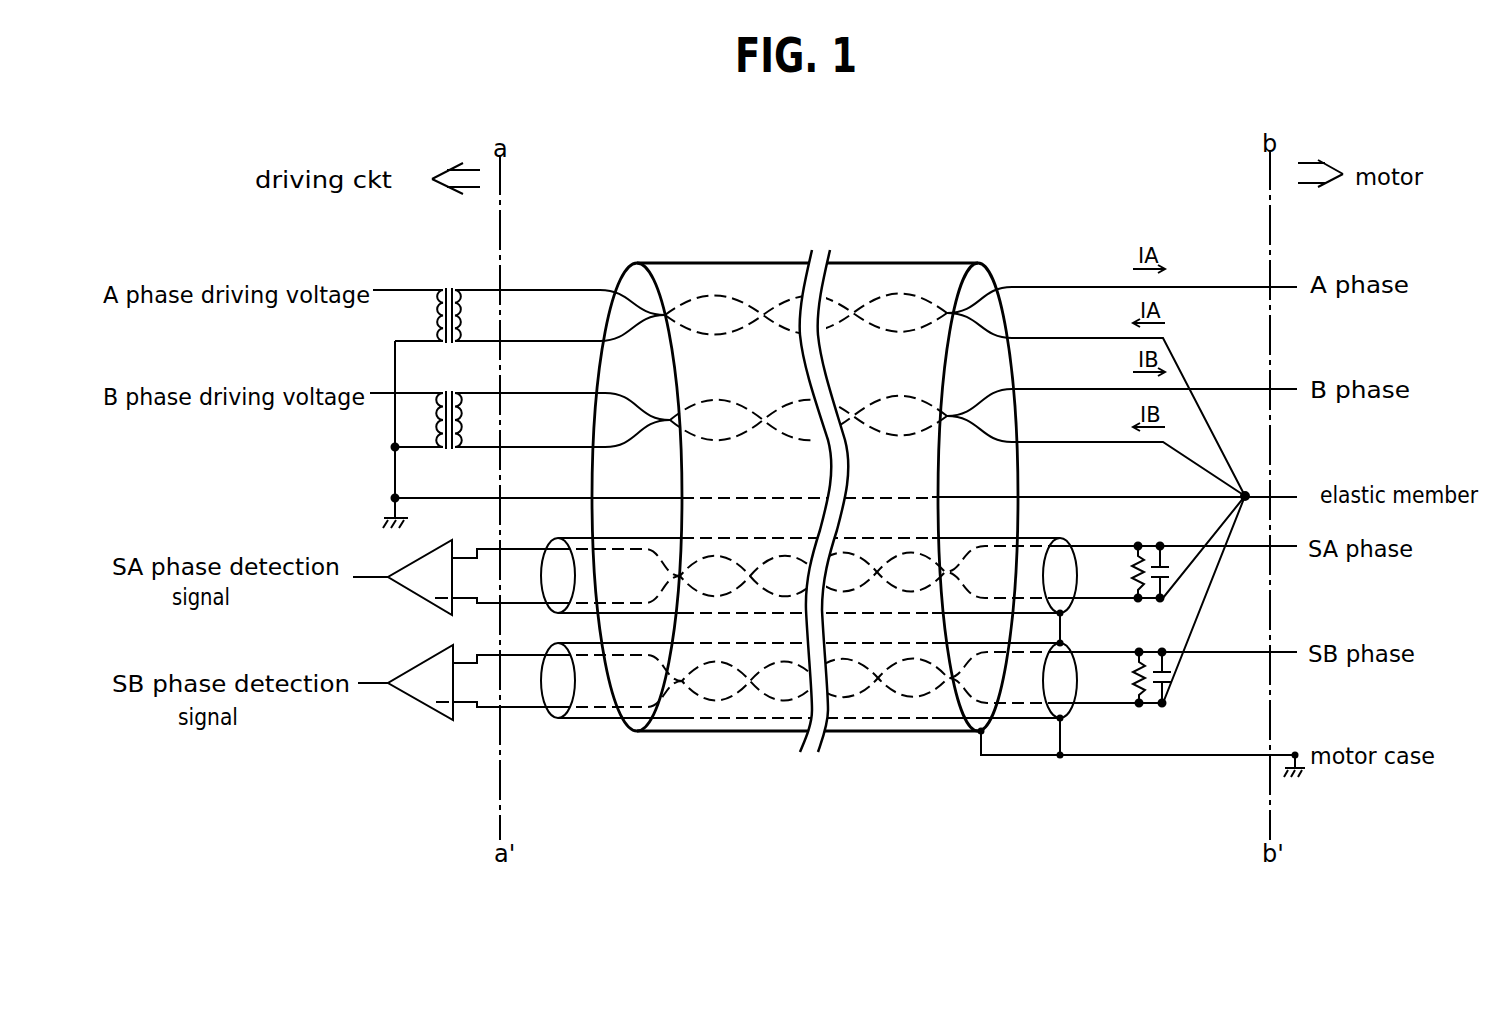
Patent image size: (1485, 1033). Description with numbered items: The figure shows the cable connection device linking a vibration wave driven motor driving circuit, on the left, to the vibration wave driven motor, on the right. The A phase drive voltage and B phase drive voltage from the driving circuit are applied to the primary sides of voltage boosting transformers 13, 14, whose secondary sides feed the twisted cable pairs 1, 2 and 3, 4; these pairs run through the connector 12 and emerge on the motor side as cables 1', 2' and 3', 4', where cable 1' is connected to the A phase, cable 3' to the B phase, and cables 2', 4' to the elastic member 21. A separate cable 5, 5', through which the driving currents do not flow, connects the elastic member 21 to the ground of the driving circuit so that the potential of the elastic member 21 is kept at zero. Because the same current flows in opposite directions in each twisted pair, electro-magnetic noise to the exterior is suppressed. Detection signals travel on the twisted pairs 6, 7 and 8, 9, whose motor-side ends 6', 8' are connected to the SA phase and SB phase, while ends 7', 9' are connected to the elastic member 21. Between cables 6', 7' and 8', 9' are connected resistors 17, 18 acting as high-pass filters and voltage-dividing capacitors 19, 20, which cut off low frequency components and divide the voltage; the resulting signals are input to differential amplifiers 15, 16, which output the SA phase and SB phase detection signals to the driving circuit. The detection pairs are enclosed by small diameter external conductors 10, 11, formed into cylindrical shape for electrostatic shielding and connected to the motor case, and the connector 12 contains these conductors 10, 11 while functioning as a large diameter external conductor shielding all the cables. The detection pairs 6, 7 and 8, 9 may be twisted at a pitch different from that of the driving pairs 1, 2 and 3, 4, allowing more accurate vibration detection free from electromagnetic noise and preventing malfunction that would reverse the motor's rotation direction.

The twisted cable 1 is at (658, 298).
The twisted cable 2 is at (560, 327).
The twisted cable 3 is at (655, 404).
The twisted cable 4 is at (562, 432).
The ground cable 5 is at (663, 481).
The twisted cable 6 is at (636, 562).
The twisted cable 7 is at (505, 590).
The twisted cable 8 is at (635, 667).
The twisted cable 9 is at (505, 694).
The cable 1' is at (1026, 295).
The cable 2' is at (1096, 403).
The cable 3' is at (1028, 400).
The cable 4' is at (1096, 455).
The ground cable 5' is at (1114, 481).
The cable 6' is at (1053, 559).
The cable 7' is at (1152, 548).
The cable 8' is at (1052, 664).
The cable 9' is at (1152, 599).
The small diameter external conductor 10 is at (1033, 537).
The small diameter external conductor 11 is at (1076, 690).
The connector 12 is at (923, 262).
The voltage boosting transformer 13 is at (441, 286).
The voltage boosting transformer 14 is at (448, 388).
The differential amplifier 15 is at (422, 557).
The differential amplifier 16 is at (427, 660).
The resistor 17 is at (1131, 545).
The resistor 18 is at (1132, 650).
The voltage-dividing capacitor 19 is at (1173, 564).
The voltage-dividing capacitor 20 is at (1165, 668).
The elastic member 21 is at (1341, 509).